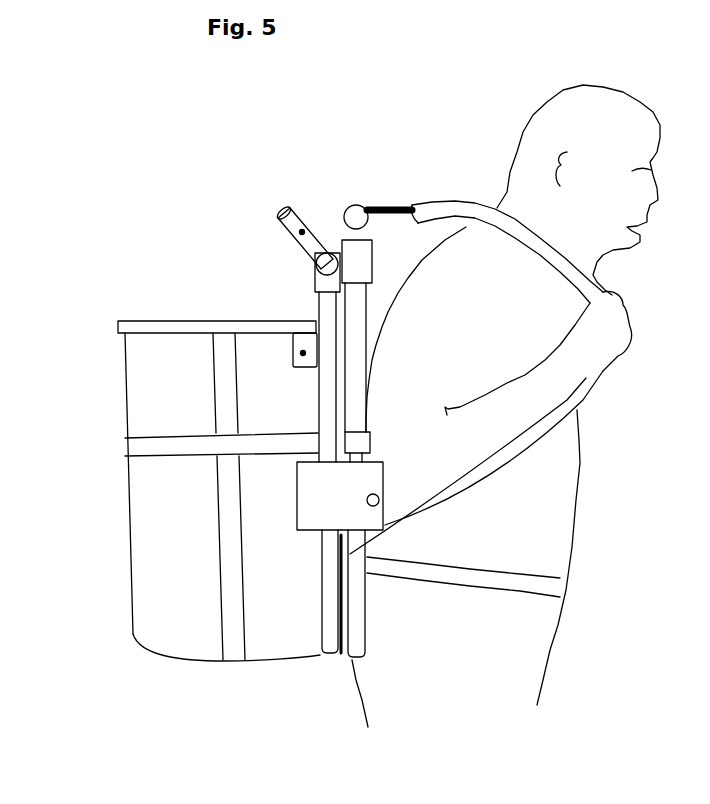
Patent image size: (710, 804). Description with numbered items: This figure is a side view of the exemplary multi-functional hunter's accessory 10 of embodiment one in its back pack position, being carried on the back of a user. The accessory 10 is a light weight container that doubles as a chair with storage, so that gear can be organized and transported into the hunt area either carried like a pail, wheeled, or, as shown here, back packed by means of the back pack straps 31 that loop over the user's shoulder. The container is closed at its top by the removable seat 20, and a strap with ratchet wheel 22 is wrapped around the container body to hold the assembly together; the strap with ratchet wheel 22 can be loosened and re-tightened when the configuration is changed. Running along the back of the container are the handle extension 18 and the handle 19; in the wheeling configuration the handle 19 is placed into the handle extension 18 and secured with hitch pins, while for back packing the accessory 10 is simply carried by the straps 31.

The multi-functional hunter's accessory 10 is at (90, 658).
The handle extension 18 is at (323, 653).
The handle 19 is at (350, 656).
The seat 20 is at (118, 327).
The strap with ratchet wheel 22 is at (125, 448).
The back pack straps 31 is at (425, 200).